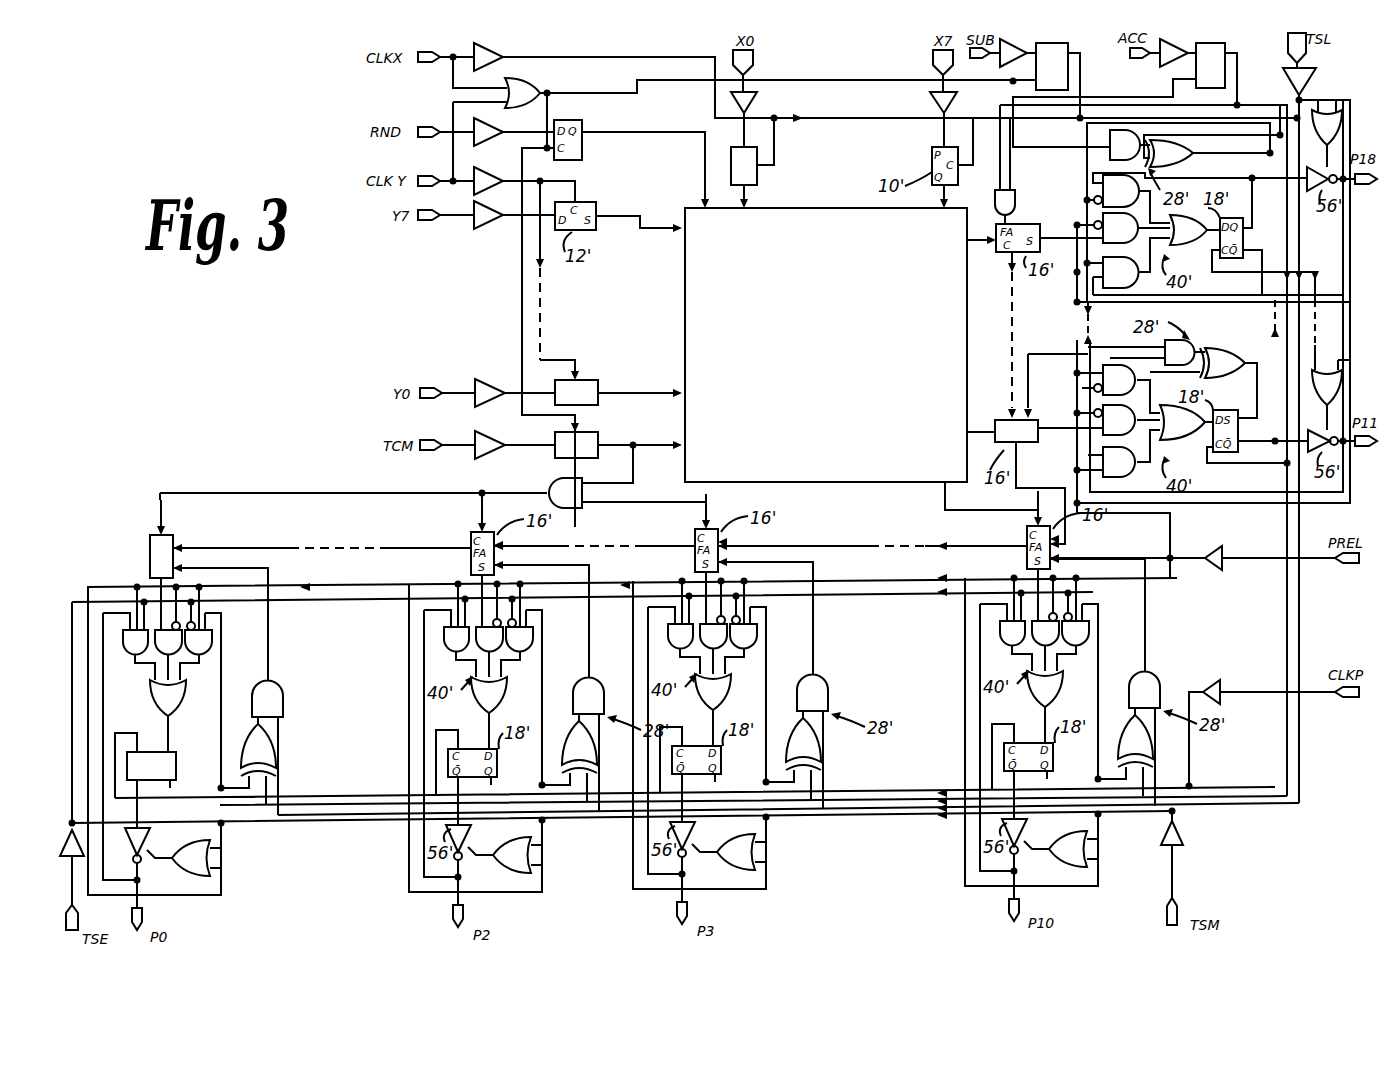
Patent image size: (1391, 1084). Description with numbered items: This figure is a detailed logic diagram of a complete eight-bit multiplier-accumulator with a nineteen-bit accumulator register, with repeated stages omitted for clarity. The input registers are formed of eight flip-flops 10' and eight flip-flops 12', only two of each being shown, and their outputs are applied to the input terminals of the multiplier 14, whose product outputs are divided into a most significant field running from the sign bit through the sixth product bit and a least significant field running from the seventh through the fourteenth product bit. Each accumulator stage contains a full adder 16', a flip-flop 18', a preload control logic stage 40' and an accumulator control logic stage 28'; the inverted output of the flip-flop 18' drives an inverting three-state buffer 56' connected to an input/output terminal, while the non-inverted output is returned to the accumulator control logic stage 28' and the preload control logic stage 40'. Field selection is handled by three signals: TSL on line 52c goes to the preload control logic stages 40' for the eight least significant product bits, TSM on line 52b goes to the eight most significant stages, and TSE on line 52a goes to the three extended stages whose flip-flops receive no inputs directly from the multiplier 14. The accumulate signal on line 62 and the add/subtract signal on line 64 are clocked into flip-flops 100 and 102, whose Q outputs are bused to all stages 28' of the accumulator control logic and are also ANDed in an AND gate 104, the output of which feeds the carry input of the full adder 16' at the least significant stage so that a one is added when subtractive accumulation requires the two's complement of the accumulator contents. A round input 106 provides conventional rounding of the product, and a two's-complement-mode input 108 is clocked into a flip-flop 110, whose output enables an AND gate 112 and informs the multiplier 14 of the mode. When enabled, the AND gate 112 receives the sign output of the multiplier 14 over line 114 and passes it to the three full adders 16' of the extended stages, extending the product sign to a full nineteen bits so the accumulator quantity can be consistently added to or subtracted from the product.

The input register flip-flop 10' is at (770, 171).
The input register flip-flop 12' is at (551, 383).
The multiplier 14 is at (812, 206).
The full adder 16' is at (190, 539).
The flip-flop 18' is at (168, 753).
The accumulator control logic stage 28' is at (260, 679).
The preload control logic stage 40' is at (159, 691).
The field selection signal line (TSE) 52a is at (72, 872).
The field selection signal line (TSM) 52b is at (1178, 878).
The field control signal line (TSL) 52c is at (1308, 72).
The inverting three-state buffer 56' is at (163, 868).
The accumulate signal line 62 is at (1170, 62).
The add/subtract signal line 64 is at (1000, 62).
The accumulate flip-flop 100 is at (1222, 43).
The add/subtract flip-flop 102 is at (1055, 43).
The AND gate 104 is at (1018, 195).
The round input 106 is at (420, 138).
The two's-complement-mode input 108 is at (432, 455).
The two's-complement-mode flip-flop 110 is at (578, 460).
The AND gate 112 is at (572, 510).
The sign output line 114 is at (636, 508).